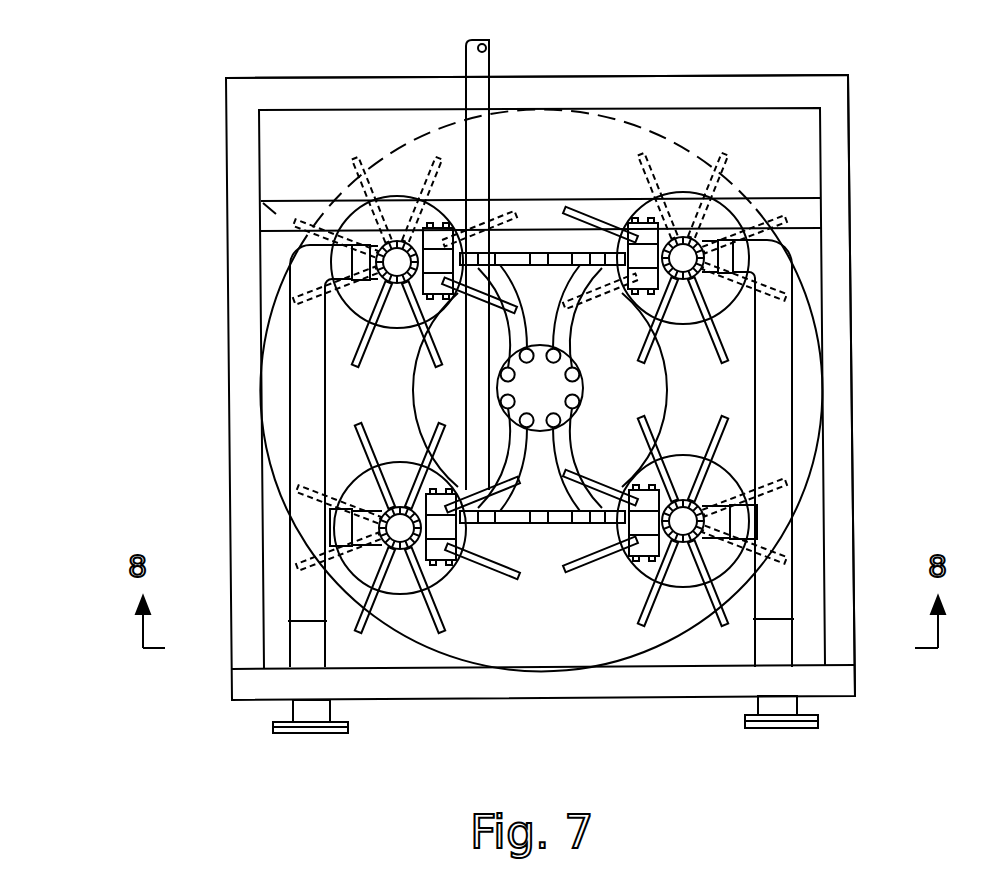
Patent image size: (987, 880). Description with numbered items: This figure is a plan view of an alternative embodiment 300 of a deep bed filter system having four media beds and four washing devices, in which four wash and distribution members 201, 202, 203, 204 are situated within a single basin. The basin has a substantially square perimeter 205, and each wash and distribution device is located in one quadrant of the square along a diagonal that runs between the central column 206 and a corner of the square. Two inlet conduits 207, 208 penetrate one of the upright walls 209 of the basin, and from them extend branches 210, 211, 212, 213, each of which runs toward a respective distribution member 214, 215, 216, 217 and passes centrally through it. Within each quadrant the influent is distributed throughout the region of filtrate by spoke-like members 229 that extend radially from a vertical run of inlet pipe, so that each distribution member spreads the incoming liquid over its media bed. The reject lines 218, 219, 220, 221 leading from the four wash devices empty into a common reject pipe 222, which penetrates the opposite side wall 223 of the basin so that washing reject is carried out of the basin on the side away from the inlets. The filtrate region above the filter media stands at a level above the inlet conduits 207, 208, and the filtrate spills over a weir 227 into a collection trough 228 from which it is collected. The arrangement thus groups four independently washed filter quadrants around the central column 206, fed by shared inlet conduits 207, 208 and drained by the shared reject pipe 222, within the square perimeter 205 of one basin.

The deep bed filter system 300 is at (158, 72).
The wash and distribution member 201 is at (453, 240).
The wash and distribution member 202 is at (650, 224).
The wash and distribution member 203 is at (460, 543).
The wash and distribution member 204 is at (620, 550).
The square perimeter 205 is at (855, 284).
The central column 206 is at (585, 395).
The inlet conduit 207 is at (335, 713).
The inlet conduit 208 is at (758, 705).
The upright wall 209 is at (848, 684).
The branch 210 is at (345, 520).
The branch 211 is at (380, 248).
The branch 212 is at (700, 510).
The branch 213 is at (752, 210).
The distribution member 214 is at (345, 492).
The distribution member 215 is at (388, 277).
The distribution member 216 is at (712, 490).
The distribution member 217 is at (712, 236).
The reject line 218 is at (462, 548).
The reject line 219 is at (490, 262).
The reject line 220 is at (563, 527).
The reject line 221 is at (568, 253).
The common reject pipe 222 is at (490, 63).
The opposite side wall 223 is at (372, 78).
The weir 227 is at (278, 213).
The collection trough 228 is at (765, 125).
The spoke-like members 229 is at (720, 335).